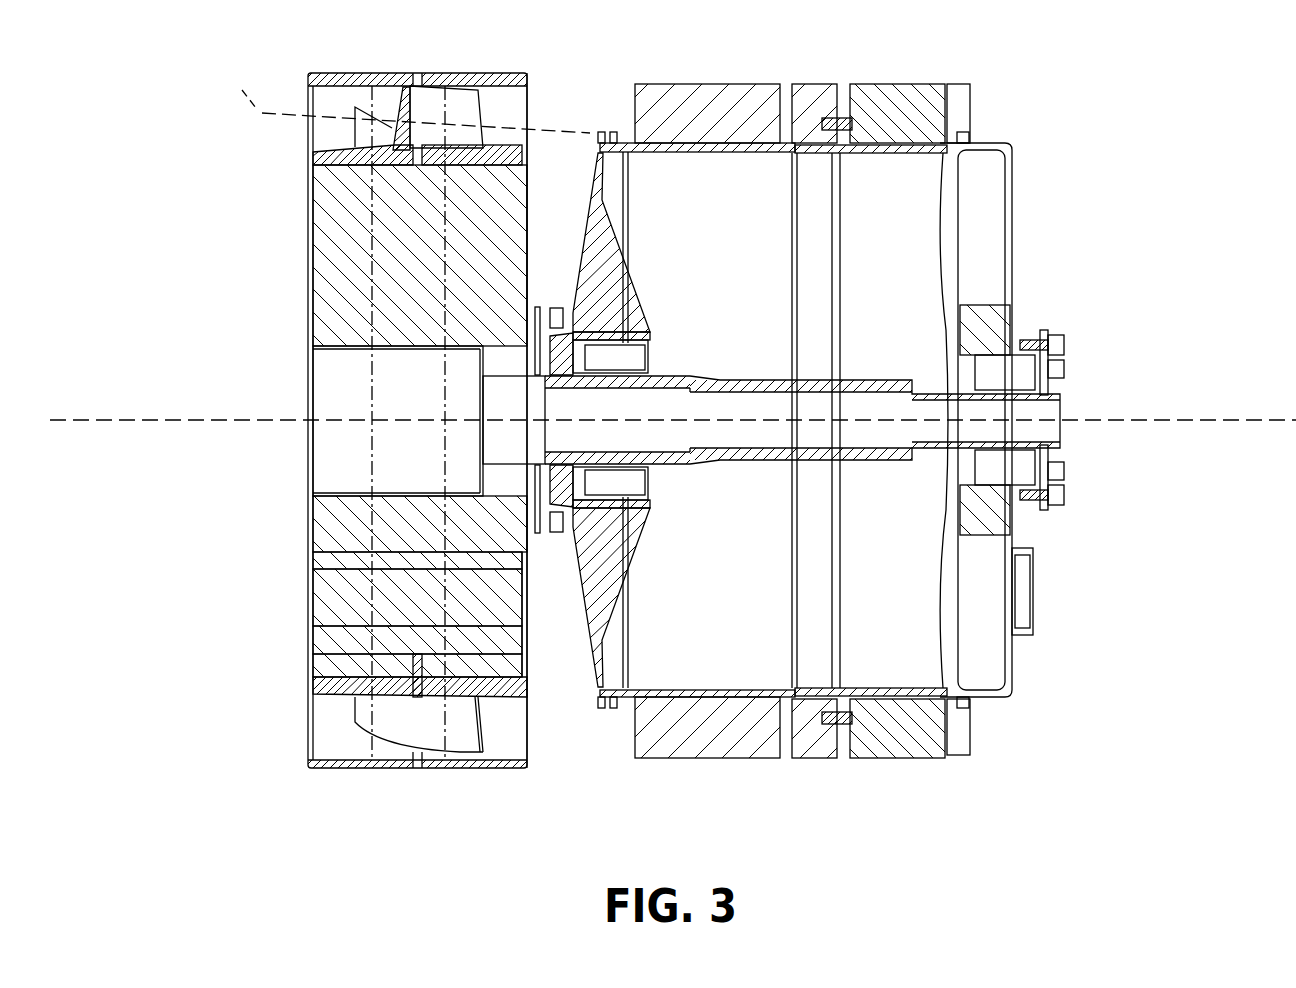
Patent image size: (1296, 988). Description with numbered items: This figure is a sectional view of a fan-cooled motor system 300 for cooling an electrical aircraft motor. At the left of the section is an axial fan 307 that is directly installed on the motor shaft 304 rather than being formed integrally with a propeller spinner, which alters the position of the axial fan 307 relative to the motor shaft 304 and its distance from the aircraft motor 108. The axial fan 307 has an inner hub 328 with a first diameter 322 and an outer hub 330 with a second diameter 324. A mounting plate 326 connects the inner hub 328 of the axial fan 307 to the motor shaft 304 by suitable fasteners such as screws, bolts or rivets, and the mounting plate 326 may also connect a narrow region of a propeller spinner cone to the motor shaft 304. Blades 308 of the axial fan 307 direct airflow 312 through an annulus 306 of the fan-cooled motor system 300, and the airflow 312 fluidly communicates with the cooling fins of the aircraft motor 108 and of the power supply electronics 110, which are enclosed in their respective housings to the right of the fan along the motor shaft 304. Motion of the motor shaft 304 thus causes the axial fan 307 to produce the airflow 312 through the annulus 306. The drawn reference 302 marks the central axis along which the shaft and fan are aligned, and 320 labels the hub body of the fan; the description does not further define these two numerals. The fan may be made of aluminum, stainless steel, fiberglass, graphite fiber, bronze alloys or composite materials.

The fan-cooled motor system 300 is at (278, 30).
The axis of rotation 302 is at (248, 422).
The motor shaft 304 is at (325, 382).
The annulus 306 is at (405, 87).
The axial fan 307 is at (488, 765).
The blades 308 is at (405, 720).
The airflow 312 is at (256, 108).
The upper rotor body 320 is at (370, 238).
The first diameter 322 is at (372, 661).
The second diameter 324 is at (442, 738).
The mounting plate 326 is at (306, 478).
The inner hub 328 is at (505, 683).
The outer hub 330 is at (510, 765).
The aircraft motor 108 is at (705, 100).
The power supply electronics 110 is at (910, 95).